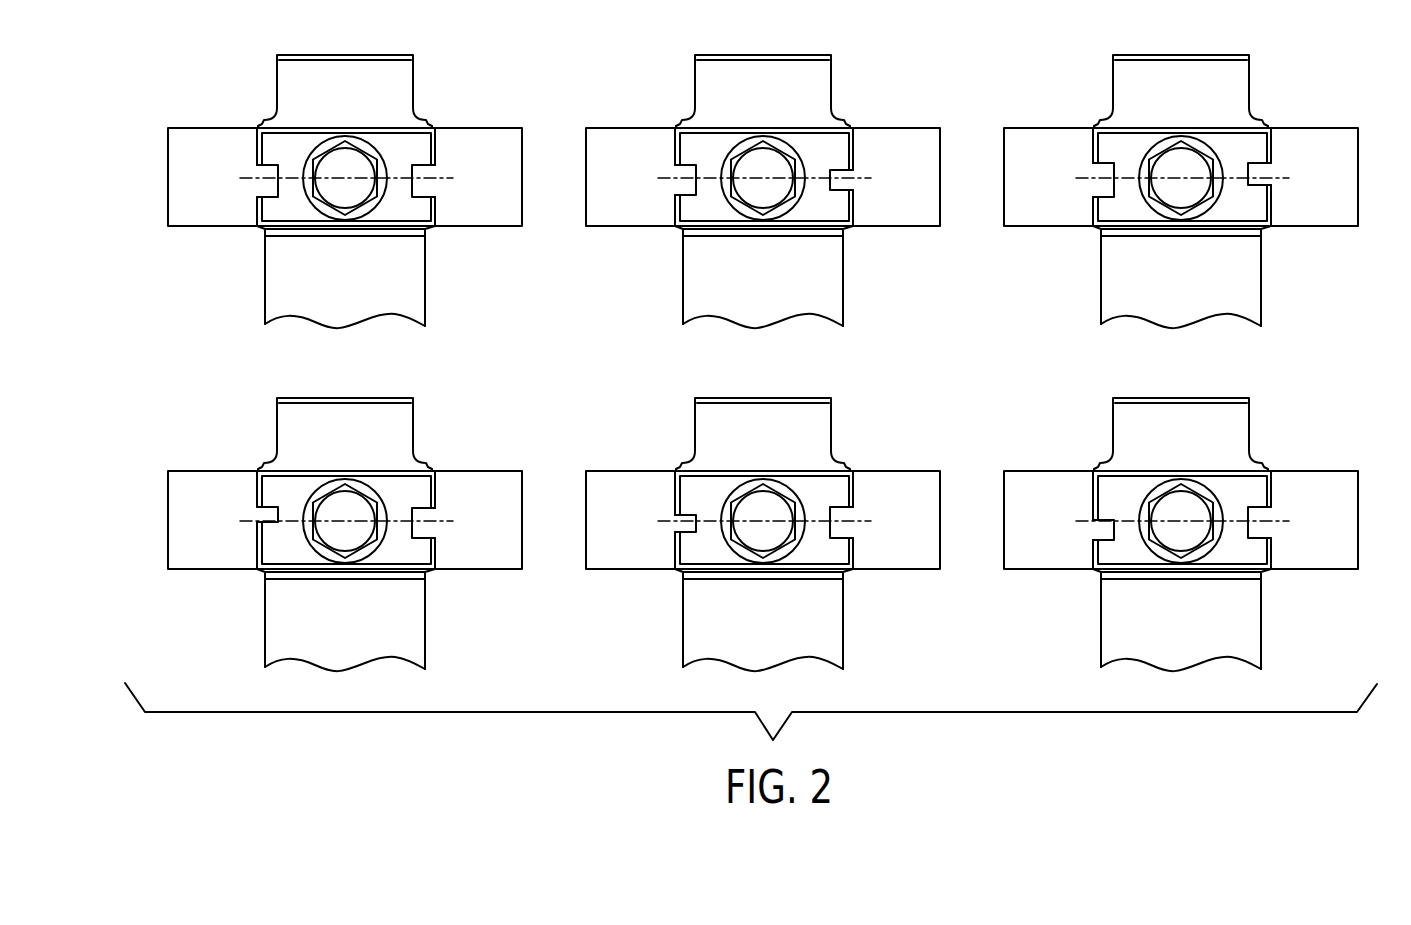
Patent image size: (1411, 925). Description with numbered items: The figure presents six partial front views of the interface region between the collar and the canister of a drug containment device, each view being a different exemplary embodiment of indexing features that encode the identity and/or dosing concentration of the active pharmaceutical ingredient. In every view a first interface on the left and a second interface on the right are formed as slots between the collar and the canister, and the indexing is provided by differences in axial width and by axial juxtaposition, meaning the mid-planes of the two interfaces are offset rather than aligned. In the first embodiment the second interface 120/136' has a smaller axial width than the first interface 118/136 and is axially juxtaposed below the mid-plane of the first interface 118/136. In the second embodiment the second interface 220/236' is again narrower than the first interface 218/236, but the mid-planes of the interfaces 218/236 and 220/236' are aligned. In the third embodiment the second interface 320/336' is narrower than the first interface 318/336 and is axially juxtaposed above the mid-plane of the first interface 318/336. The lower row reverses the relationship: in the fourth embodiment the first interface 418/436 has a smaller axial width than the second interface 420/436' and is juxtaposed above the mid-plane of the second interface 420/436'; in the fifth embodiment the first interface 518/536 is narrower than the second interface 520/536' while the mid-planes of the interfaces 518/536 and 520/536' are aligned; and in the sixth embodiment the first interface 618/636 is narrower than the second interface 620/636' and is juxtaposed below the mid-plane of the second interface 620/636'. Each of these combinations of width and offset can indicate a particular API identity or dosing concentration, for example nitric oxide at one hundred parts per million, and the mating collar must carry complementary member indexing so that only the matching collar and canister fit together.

The first interface 118 is at (228, 194).
The first interface 136 is at (231, 194).
The second interface 120 is at (463, 194).
The second interface 136' is at (461, 194).
The first interface 218 is at (645, 194).
The first interface 236 is at (649, 194).
The second interface 220 is at (881, 195).
The second interface 236' is at (879, 197).
The first interface 318 is at (1062, 193).
The first interface 336 is at (1066, 193).
The second interface 320 is at (1299, 164).
The second interface 336' is at (1298, 179).
The first interface 418 is at (225, 504).
The first interface 436 is at (229, 518).
The second interface 420 is at (463, 537).
The second interface 436' is at (461, 537).
The first interface 518 is at (644, 538).
The first interface 536 is at (648, 541).
The second interface 520 is at (881, 537).
The second interface 536' is at (879, 537).
The first interface 618 is at (1061, 538).
The first interface 636 is at (1065, 543).
The second interface 620 is at (1299, 537).
The second interface 636' is at (1297, 537).